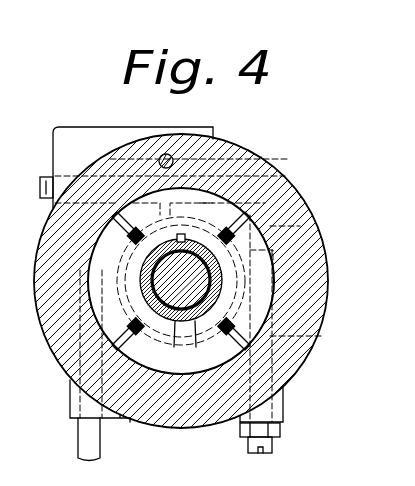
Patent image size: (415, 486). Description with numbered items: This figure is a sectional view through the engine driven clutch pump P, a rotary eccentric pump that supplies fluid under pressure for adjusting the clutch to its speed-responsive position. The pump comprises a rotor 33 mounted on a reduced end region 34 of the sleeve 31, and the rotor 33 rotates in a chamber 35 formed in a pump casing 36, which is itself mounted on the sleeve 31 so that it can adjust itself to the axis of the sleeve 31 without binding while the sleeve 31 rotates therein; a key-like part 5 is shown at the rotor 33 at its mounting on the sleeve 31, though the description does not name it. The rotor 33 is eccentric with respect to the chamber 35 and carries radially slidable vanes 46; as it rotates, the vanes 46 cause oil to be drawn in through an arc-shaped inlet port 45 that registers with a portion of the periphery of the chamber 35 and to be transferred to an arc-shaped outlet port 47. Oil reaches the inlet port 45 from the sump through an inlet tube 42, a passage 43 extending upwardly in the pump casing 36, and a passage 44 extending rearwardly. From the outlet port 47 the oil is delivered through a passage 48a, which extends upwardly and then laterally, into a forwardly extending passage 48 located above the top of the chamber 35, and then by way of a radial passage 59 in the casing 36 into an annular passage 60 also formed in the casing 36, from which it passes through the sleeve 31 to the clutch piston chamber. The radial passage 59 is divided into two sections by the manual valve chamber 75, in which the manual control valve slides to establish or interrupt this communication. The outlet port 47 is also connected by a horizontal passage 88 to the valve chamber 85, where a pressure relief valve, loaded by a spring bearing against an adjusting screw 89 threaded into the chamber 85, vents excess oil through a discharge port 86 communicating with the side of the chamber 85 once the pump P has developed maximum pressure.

The pump casing 36 is at (67, 362).
The rotor 33 is at (195, 362).
The manual valve chamber 75 is at (107, 170).
The forwardly extending passage 48 is at (175, 157).
The passage 48a is at (240, 180).
The radial passage 59 is at (158, 160).
The clutch pump P is at (307, 200).
The horizontal passage 88 is at (308, 220).
The outlet port 47 is at (316, 260).
The discharge port 86 is at (322, 296).
The valve chamber 85 is at (322, 337).
The vanes 46 is at (248, 347).
The annular passage 60 is at (120, 254).
The passage 44 is at (85, 308).
The passage 43 is at (75, 342).
The inlet port 45 is at (117, 368).
The inlet tube 42 is at (85, 438).
The adjusting screw 89 is at (275, 447).
The chamber 35 is at (182, 322).
The sleeve 31 is at (174, 330).
The reduced end region 34 is at (193, 345).
The key 5 is at (172, 263).